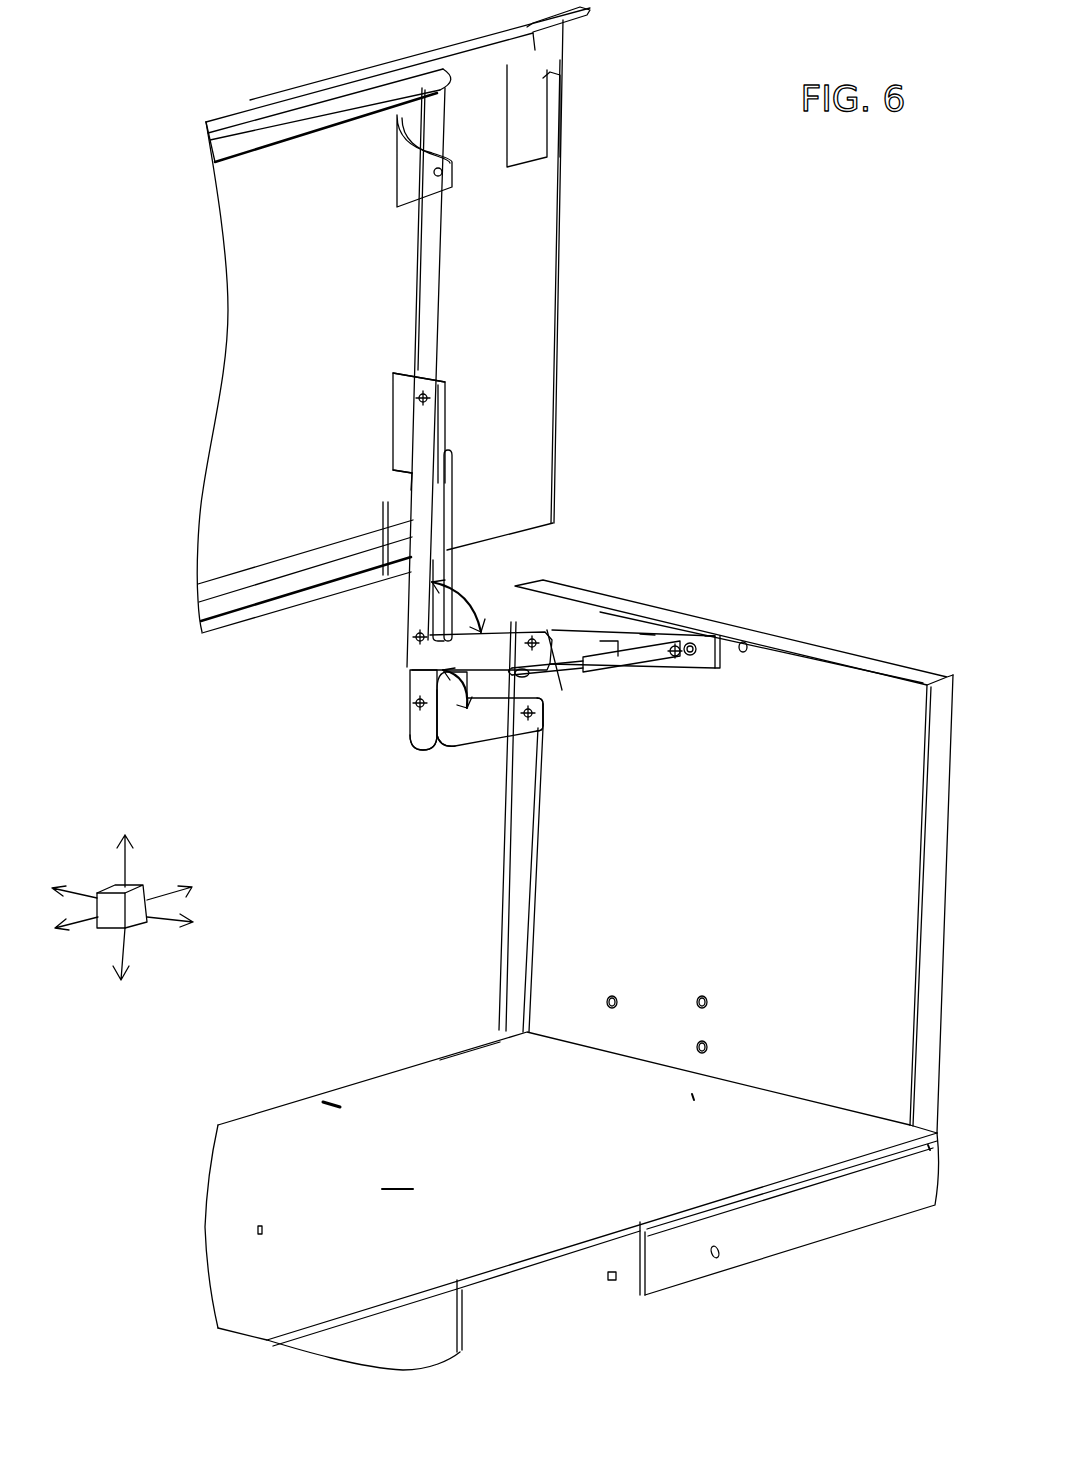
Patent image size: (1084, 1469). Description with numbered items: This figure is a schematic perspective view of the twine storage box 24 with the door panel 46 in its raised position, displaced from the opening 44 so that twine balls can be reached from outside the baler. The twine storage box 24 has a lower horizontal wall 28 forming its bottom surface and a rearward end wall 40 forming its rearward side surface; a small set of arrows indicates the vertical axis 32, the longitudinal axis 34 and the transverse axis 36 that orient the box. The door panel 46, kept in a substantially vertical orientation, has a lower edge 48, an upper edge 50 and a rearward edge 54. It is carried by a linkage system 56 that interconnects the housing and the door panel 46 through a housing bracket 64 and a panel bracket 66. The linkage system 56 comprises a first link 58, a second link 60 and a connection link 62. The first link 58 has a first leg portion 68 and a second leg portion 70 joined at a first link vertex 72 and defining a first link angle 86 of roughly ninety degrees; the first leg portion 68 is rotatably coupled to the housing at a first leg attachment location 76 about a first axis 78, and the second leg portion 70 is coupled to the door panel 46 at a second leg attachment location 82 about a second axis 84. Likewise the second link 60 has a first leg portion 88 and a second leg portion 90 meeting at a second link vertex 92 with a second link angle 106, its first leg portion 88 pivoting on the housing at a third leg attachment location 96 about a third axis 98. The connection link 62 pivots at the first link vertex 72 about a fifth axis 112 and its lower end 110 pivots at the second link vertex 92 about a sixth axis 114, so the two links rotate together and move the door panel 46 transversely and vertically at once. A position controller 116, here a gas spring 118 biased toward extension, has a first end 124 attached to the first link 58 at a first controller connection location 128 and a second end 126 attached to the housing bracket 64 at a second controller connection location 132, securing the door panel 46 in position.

The twine storage box 24 is at (578, 789).
The lower horizontal wall 28 is at (290, 1140).
The vertical axis 32 is at (125, 865).
The longitudinal axis 34 is at (158, 888).
The transverse axis 36 is at (180, 920).
The rearward end wall 40 is at (937, 904).
The opening 44 is at (358, 1080).
The door panel 46 is at (318, 78).
The lower edge 48 is at (230, 633).
The upper edge 50 is at (228, 120).
The rearward edge 54 is at (563, 211).
The linkage system 56 is at (438, 467).
The first link 58 is at (422, 480).
The second link 60 is at (445, 532).
The connection link 62 is at (425, 682).
The housing bracket 64 is at (690, 634).
The panel bracket 66 is at (400, 420).
The first leg portion of the first link 68 is at (537, 639).
The second leg portion of the first link 70 is at (425, 437).
The first link vertex 72 is at (413, 653).
The first leg attachment location 76 is at (618, 657).
The first axis 78 is at (647, 634).
The second leg attachment location 82 is at (420, 398).
The second axis 84 is at (420, 388).
The first link angle 86 is at (440, 580).
The first leg portion of the second link 88 is at (488, 732).
The second leg portion of the second link 90 is at (422, 497).
The second link vertex 92 is at (405, 765).
The third leg attachment location 96 is at (541, 703).
The third axis 98 is at (527, 727).
The second link angle 106 is at (445, 746).
The lower end 110 is at (414, 748).
The fifth axis 112 is at (419, 637).
The sixth axis 114 is at (419, 703).
The position controller 116 is at (672, 626).
The gas spring 118 is at (713, 635).
The first end 124 is at (565, 670).
The second end 126 is at (655, 657).
The first controller connection location 128 is at (543, 673).
The second controller connection location 132 is at (700, 652).